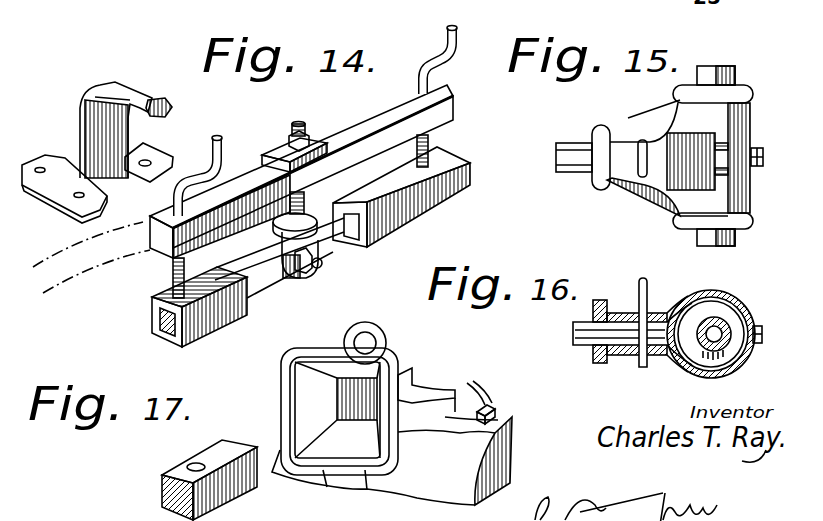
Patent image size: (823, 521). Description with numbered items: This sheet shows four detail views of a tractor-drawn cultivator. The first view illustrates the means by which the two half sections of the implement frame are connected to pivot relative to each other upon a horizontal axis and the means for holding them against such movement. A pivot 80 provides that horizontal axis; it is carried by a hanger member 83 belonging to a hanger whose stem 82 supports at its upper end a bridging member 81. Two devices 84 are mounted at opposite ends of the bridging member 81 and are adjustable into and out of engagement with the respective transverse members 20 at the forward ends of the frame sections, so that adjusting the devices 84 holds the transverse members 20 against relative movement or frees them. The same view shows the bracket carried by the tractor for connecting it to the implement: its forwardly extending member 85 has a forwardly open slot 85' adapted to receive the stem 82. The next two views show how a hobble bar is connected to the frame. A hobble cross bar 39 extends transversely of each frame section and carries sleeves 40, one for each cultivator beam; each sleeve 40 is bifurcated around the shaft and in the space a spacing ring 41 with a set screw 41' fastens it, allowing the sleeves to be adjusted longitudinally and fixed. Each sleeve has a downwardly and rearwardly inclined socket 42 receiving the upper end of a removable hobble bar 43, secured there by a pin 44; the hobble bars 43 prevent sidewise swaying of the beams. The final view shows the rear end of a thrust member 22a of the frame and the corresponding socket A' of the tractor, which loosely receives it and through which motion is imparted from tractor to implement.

In FIG. 14, the forwardly extending member 85 is at (97, 141).
In FIG. 14, the slot 85' is at (176, 103).
In FIG. 14, the adjustable devices 84 is at (221, 144).
In FIG. 14, the bridging member 81 is at (335, 128).
In FIG. 14, the stem 82 is at (329, 192).
In FIG. 14, the hanger member 83 is at (280, 241).
In FIG. 14, the pivot 80 is at (319, 270).
In FIG. 14, the transverse member 20 is at (454, 197).
In FIG. 15, the hobble cross bar 39 is at (737, 72).
In FIG. 16, the hobble cross bar 39 is at (702, 320).
In FIG. 15, the sleeve 40 is at (741, 119).
In FIG. 16, the sleeve 40 is at (704, 296).
In FIG. 15, the spacing ring 41 is at (722, 167).
In FIG. 16, the spacing ring 41 is at (724, 326).
In FIG. 15, the set screw 41' is at (768, 147).
In FIG. 16, the set screw 41' is at (762, 349).
In FIG. 15, the socket 42 is at (618, 143).
In FIG. 16, the socket 42 is at (622, 314).
In FIG. 15, the hobble bar 43 is at (568, 173).
In FIG. 16, the hobble bar 43 is at (583, 347).
In FIG. 15, the pin 44 is at (622, 194).
In FIG. 16, the pin 44 is at (647, 366).
In FIG. 17, the block 22a is at (245, 484).
In FIG. 17, the socket A' is at (448, 386).